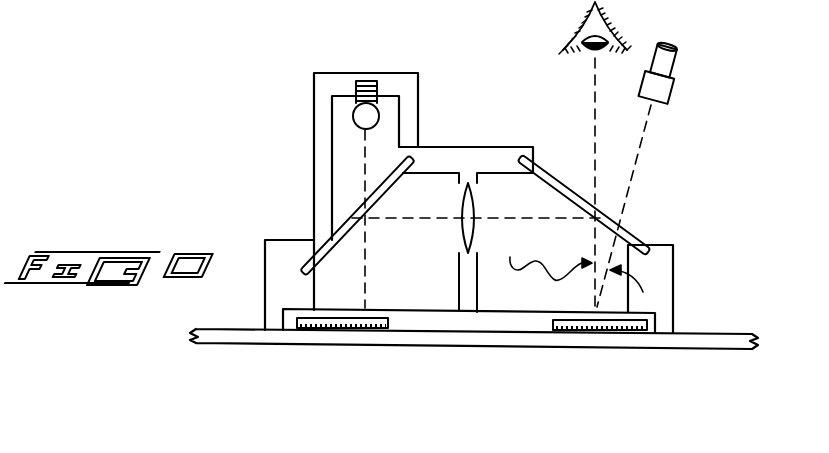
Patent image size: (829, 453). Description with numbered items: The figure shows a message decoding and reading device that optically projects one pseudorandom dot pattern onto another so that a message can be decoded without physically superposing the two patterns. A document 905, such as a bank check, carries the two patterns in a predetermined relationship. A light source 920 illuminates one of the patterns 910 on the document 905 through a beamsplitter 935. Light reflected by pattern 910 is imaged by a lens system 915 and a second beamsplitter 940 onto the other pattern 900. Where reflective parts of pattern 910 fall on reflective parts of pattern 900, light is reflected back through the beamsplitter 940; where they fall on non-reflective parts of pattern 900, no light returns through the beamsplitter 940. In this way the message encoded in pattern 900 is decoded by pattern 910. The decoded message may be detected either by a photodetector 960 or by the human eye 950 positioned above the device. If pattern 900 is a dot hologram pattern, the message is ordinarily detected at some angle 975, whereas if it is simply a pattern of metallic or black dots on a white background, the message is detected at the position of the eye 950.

The pattern 900 is at (612, 337).
The document 905 is at (715, 343).
The pattern 910 is at (322, 333).
The lens system 915 is at (456, 228).
The light source 920 is at (368, 114).
The beamsplitter 935 is at (347, 226).
The beamsplitter 940 is at (630, 232).
The human eye 950 is at (583, 46).
The photodetector 960 is at (668, 88).
The angle 975 is at (566, 257).